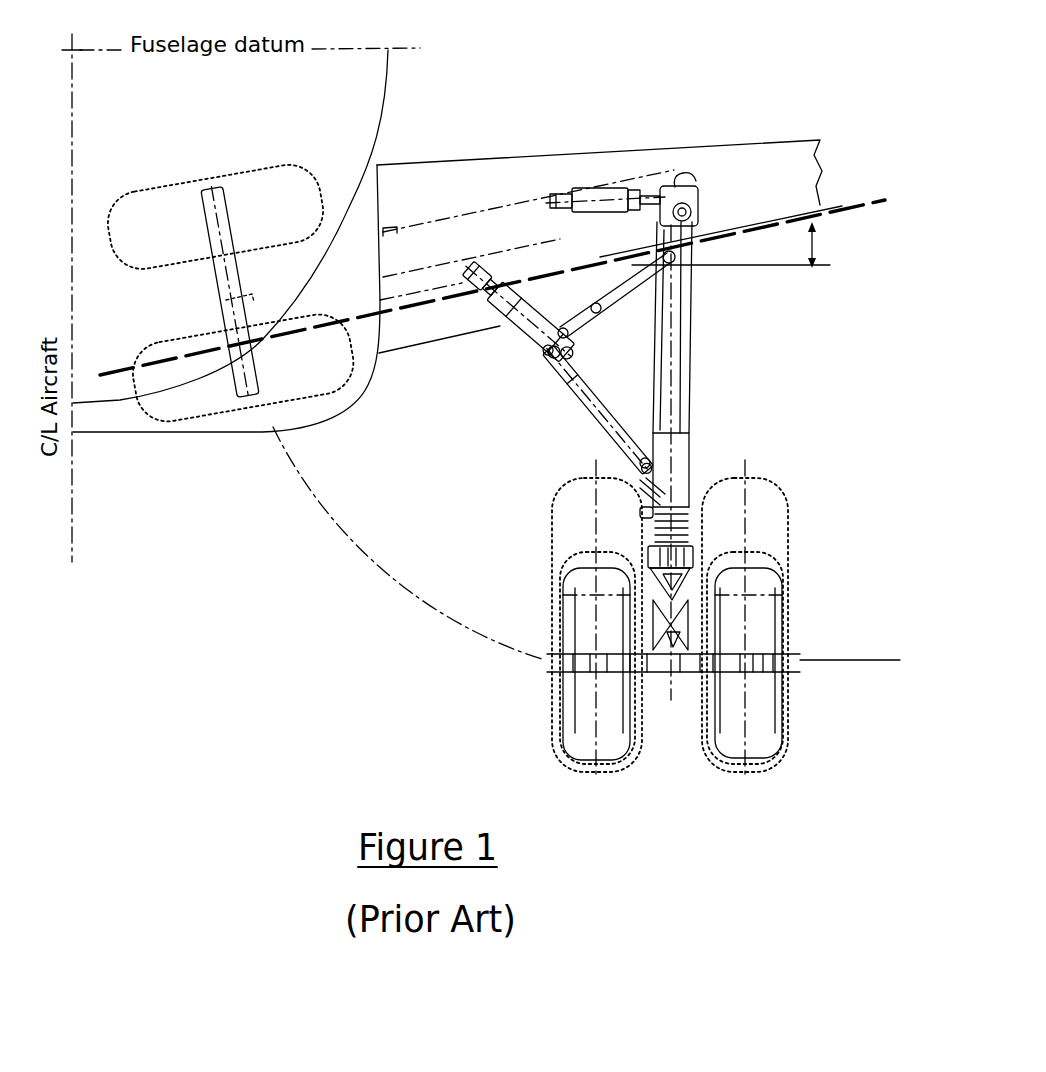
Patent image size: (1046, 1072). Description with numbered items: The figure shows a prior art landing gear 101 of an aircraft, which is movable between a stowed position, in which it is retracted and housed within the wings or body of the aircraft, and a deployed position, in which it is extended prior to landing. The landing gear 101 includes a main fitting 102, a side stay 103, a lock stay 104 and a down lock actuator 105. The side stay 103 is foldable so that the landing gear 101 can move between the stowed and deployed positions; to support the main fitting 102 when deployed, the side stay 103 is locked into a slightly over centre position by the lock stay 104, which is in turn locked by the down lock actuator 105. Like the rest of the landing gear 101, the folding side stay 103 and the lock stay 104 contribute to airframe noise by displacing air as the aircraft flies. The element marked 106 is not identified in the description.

The landing gear 101 is at (254, 540).
The main fitting 102 is at (692, 374).
The side stay 103 is at (587, 403).
The lock stay 104 is at (612, 298).
The down lock actuator 105 is at (523, 272).
The lower strut attachment 106 is at (643, 513).